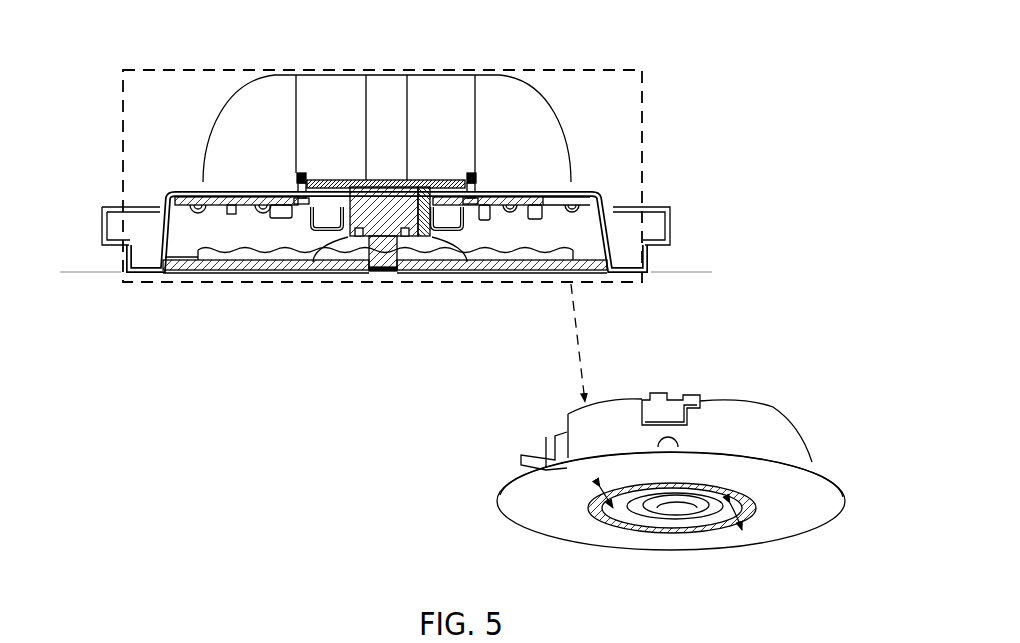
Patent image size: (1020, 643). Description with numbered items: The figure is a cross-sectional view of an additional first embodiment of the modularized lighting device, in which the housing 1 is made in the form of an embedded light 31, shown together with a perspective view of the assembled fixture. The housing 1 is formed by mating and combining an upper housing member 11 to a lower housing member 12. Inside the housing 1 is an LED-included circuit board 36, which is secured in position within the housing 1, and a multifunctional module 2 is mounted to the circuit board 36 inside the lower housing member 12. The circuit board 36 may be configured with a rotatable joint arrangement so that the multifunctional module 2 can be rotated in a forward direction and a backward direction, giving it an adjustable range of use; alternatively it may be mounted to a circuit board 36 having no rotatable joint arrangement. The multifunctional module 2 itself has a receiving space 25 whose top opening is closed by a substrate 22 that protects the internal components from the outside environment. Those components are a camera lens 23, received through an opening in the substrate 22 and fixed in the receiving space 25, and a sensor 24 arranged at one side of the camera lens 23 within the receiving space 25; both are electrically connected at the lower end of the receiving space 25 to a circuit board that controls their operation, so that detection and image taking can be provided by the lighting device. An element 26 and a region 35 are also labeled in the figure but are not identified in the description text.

The housing 1 is at (665, 279).
The multifunctional module 2 is at (660, 501).
The upper housing member 11 is at (550, 270).
The lower housing member 12 is at (102, 210).
The substrate 22 is at (362, 239).
The camera lens 23 is at (383, 270).
The sensor 24 is at (431, 234).
The receiving space 25 is at (318, 243).
The light guide plate 26 is at (572, 214).
The embedded light 31 is at (212, 279).
The mounting hole 35 is at (215, 70).
The LED-included circuit board 36 is at (233, 214).